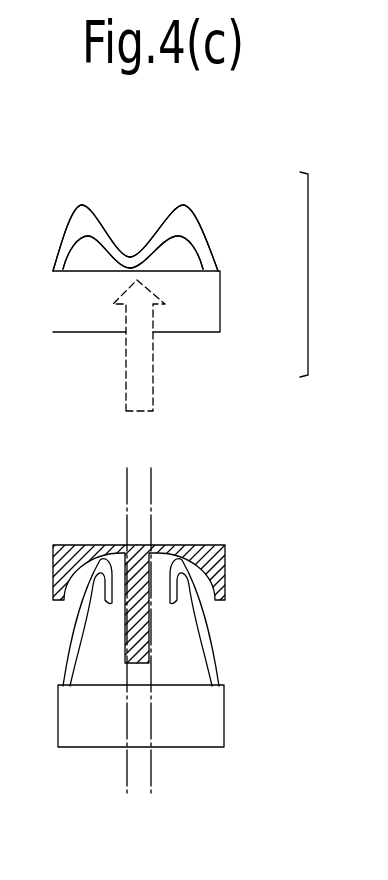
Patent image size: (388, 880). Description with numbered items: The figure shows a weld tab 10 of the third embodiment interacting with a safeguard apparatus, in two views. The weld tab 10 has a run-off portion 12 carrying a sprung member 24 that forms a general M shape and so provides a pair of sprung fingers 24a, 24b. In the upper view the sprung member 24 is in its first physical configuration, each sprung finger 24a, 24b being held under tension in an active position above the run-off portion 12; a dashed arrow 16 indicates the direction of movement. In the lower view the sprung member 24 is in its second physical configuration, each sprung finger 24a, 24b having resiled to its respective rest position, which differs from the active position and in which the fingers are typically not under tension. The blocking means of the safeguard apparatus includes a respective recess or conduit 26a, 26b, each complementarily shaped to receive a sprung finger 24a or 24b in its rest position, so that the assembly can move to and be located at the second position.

The weld tab 10 is at (308, 282).
The run-off portion 12 is at (93, 320).
The pressing direction 16 is at (140, 378).
The sprung member 24 is at (66, 206).
The sprung finger 24a is at (200, 217).
The sprung finger 24b is at (98, 213).
The recess or conduit 26a is at (162, 565).
The recess or conduit 26b is at (112, 563).